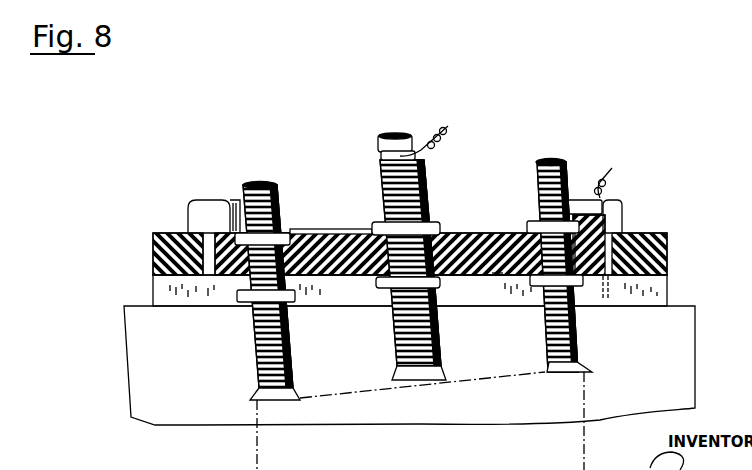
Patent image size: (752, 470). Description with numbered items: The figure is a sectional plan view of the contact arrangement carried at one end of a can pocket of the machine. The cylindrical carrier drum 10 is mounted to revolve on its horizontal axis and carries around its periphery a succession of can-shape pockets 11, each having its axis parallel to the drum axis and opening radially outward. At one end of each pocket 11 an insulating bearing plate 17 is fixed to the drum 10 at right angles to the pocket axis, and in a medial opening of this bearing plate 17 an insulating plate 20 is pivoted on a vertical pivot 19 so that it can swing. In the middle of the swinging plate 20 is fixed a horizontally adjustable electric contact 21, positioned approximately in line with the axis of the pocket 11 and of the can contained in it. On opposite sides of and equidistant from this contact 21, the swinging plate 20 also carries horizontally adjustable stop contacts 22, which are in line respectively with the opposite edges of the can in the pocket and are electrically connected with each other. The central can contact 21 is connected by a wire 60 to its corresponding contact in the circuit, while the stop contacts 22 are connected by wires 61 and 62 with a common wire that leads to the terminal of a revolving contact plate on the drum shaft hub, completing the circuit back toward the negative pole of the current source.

The cylindrical carrier drum 10 is at (427, 365).
The can-shape pocket 11 is at (496, 412).
The insulating bearing plate 17 is at (668, 249).
The vertical pivot 19 is at (365, 233).
The insulating plate 20 is at (497, 233).
The electric contact 21 is at (423, 186).
The stop contact 22 is at (266, 183).
The wire 60 is at (448, 127).
The wire 61 is at (498, 275).
The wire 62 is at (608, 183).